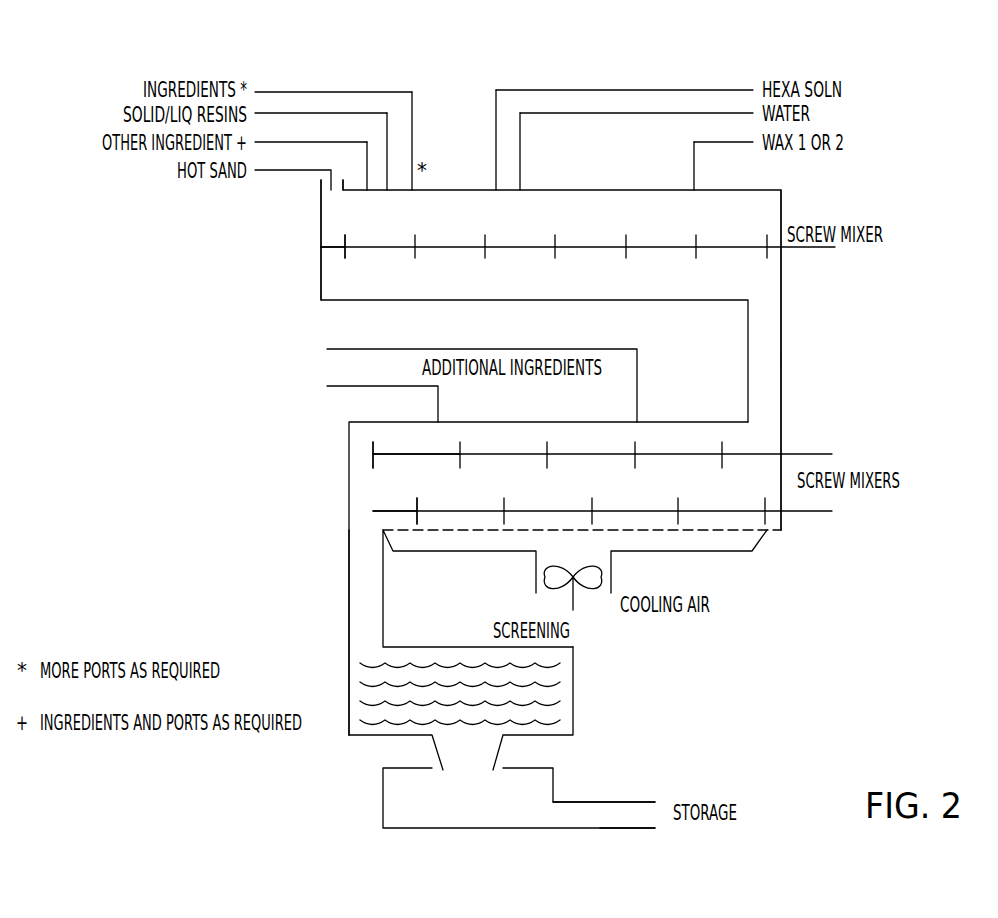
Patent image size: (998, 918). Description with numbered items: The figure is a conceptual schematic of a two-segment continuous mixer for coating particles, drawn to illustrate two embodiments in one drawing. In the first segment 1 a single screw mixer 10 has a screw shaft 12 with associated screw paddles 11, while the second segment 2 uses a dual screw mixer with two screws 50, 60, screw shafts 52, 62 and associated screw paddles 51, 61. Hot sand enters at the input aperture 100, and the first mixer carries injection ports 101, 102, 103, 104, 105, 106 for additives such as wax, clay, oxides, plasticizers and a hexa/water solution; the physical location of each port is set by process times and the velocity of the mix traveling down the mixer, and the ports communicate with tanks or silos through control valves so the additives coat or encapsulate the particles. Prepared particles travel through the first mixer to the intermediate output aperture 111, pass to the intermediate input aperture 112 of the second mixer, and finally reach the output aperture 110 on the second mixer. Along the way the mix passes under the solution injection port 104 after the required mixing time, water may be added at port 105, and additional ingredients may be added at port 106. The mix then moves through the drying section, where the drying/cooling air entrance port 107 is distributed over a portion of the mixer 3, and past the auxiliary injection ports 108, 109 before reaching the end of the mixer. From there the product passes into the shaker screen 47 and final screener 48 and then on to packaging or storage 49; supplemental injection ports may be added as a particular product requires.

The first segment 1 is at (602, 284).
The single screw mixer 10 is at (896, 217).
The input aperture 100 is at (323, 194).
The injection port 101 is at (368, 192).
The injection port 102 is at (387, 191).
The injection port 103 is at (412, 191).
The solution injection port 104 is at (496, 191).
The water port 105 is at (520, 191).
The injection port 106 is at (694, 191).
The screw paddles 11 is at (344, 236).
The screw shaft 12 is at (337, 250).
The intermediate output aperture 111 is at (765, 297).
The intermediate input aperture 112 is at (765, 405).
The second segment 2 is at (349, 420).
The auxiliary injection port 109 is at (438, 428).
The auxiliary injection port 108 is at (637, 423).
The screw 50 is at (842, 440).
The screw paddles 51 is at (372, 452).
The screw shaft 52 is at (396, 459).
The screw 60 is at (842, 497).
The screw shaft 62 is at (380, 508).
The screw paddles 61 is at (417, 518).
The drying/cooling air entrance port 107 is at (593, 552).
The portion of the mixer 3 is at (760, 545).
The output aperture 110 is at (349, 562).
The shaker screen 47 is at (573, 690).
The final screener 48 is at (486, 804).
The storage 49 is at (784, 824).